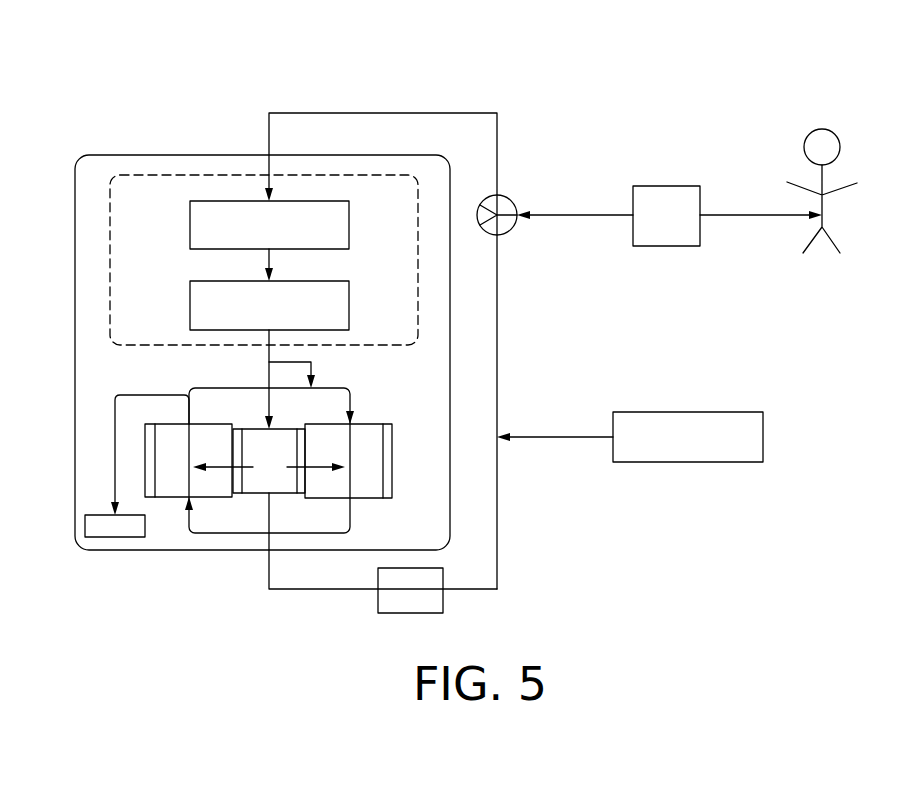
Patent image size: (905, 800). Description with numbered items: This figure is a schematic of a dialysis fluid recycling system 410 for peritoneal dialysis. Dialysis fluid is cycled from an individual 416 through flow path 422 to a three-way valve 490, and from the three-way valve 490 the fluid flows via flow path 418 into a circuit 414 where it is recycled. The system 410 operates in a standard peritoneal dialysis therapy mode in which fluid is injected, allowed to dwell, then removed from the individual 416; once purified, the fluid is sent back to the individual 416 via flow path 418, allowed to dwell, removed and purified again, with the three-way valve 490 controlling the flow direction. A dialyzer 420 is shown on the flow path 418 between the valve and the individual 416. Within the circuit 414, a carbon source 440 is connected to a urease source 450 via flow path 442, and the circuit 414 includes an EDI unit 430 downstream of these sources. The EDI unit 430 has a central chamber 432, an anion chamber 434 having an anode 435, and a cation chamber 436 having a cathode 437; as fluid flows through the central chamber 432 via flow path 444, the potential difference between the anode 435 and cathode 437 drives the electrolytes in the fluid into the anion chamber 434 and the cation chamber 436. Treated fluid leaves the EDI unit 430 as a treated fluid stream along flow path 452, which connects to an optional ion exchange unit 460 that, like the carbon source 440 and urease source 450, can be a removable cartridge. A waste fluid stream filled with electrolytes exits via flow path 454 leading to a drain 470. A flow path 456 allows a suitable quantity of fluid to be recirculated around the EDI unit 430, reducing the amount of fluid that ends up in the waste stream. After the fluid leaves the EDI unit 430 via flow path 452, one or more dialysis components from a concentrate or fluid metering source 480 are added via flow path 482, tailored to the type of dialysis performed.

The dialysis fluid recycling system 410 is at (226, 82).
The circuit 414 is at (466, 152).
The individual 416 is at (838, 138).
The flow path 418 is at (329, 113).
The dialyzer 420 is at (672, 186).
The flow path 422 is at (580, 216).
The EDI unit 430 is at (128, 478).
The central chamber 432 is at (253, 485).
The anion chamber 434 is at (167, 433).
The anode 435 is at (145, 453).
The cation chamber 436 is at (373, 492).
The cathode 437 is at (388, 450).
The carbon source 440 is at (190, 232).
The flow path 442 is at (268, 256).
The flow path 444 is at (268, 362).
The urease source 450 is at (190, 297).
The flow path 452 is at (302, 589).
The flow path 454 is at (115, 423).
The flow path 456 is at (342, 387).
The ion exchange unit 460 is at (378, 600).
The drain 470 is at (97, 537).
The concentrate or fluid metering source 480 is at (665, 462).
The flow path 482 is at (553, 438).
The three-way valve 490 is at (510, 200).